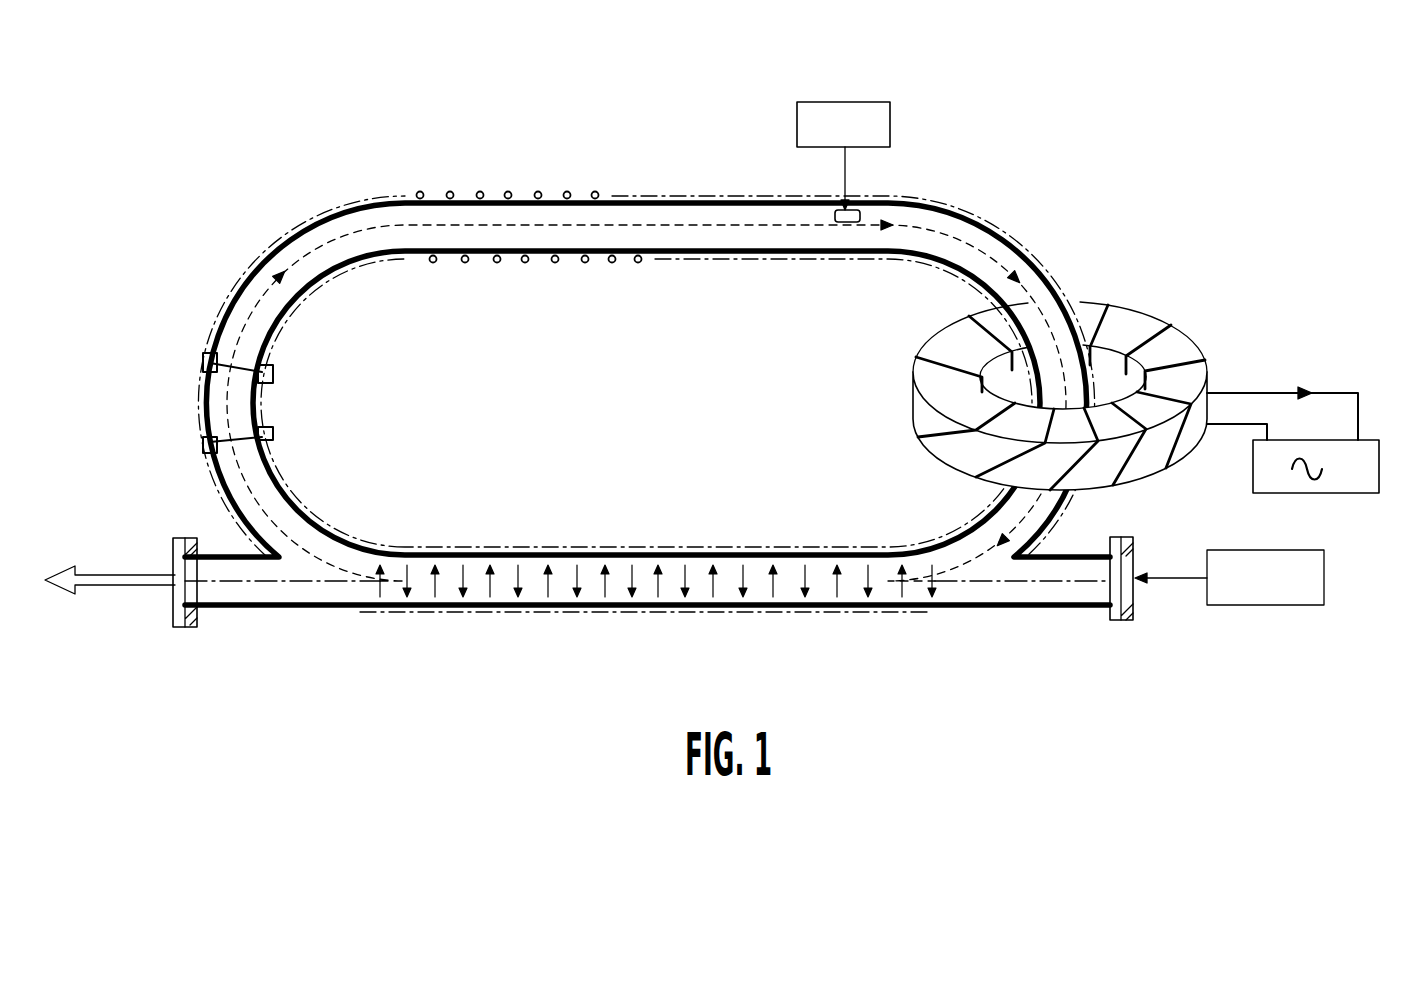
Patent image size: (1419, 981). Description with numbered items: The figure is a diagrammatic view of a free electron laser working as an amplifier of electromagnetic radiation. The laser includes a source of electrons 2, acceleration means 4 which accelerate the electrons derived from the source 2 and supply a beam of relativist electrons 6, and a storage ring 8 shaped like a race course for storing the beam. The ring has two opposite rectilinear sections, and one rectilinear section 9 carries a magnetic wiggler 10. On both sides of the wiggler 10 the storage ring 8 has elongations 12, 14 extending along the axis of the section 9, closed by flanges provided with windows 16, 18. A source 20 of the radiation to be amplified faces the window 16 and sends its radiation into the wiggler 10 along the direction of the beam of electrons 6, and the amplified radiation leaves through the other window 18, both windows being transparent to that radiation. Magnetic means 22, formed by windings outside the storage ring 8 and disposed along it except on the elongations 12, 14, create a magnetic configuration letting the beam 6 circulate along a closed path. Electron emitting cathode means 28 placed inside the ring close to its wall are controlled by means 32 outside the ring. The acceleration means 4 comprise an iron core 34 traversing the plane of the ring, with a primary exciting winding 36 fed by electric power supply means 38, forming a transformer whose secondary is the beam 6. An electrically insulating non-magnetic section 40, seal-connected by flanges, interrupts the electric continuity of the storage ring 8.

The source of electrons 2 is at (780, 140).
The acceleration means 4 is at (1052, 385).
The beam of relativist electrons 6 is at (370, 231).
The storage ring 8 is at (1003, 234).
The rectilinear section 9 is at (638, 555).
The magnetic wiggler 10 is at (488, 600).
The elongation 12 is at (1035, 605).
The elongation 14 is at (252, 607).
The window 16 is at (1128, 590).
The window 18 is at (176, 584).
The source of electromagnetic radiation 20 is at (1300, 592).
The magnetic means 22 is at (565, 190).
The electron emitting cathode means 28 is at (862, 212).
The control means 32 is at (800, 108).
The iron core 34 is at (955, 340).
The primary exciting winding 36 is at (935, 428).
The electric power supply means 38 is at (1310, 488).
The electrically insulating non-magnetic section 40 is at (206, 380).